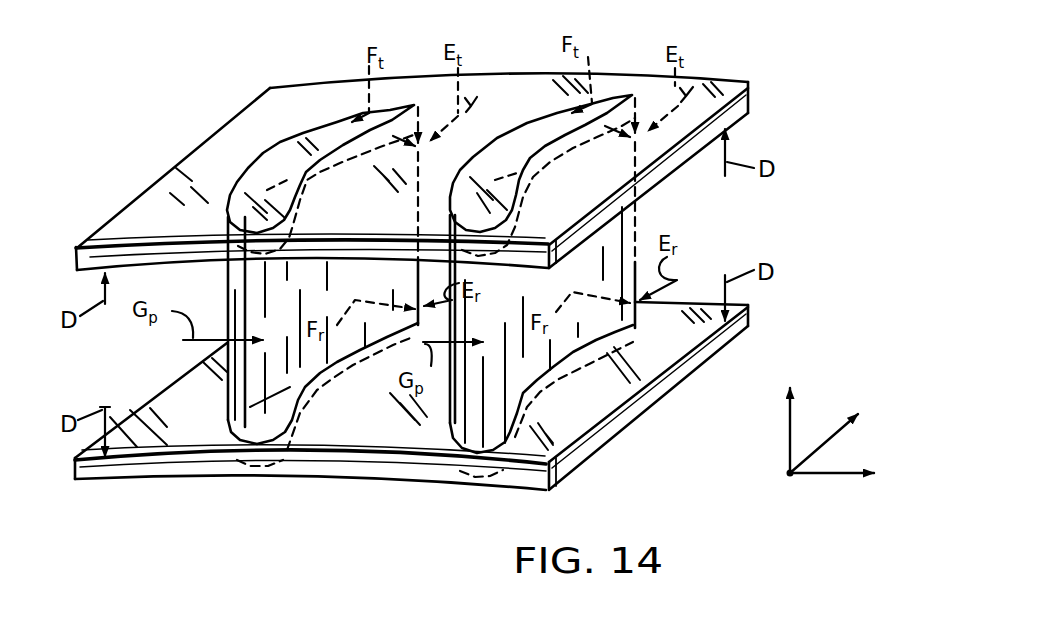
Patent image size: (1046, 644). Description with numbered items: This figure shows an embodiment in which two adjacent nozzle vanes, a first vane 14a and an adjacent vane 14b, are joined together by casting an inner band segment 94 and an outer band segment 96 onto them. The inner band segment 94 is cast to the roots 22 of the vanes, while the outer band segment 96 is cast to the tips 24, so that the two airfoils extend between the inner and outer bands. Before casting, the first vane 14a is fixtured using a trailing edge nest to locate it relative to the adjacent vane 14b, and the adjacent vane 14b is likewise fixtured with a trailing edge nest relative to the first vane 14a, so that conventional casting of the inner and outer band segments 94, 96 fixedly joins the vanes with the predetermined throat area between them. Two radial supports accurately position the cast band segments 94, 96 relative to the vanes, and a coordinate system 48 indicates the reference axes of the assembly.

The outer band segment 96 is at (745, 99).
The inner band segment 94 is at (684, 381).
The tip 24 is at (247, 188).
The root 22 is at (315, 399).
The first vane 14a is at (460, 431).
The adjacent vane 14b is at (240, 443).
The coordinate system (X, Y, Z axes) 48 is at (788, 481).